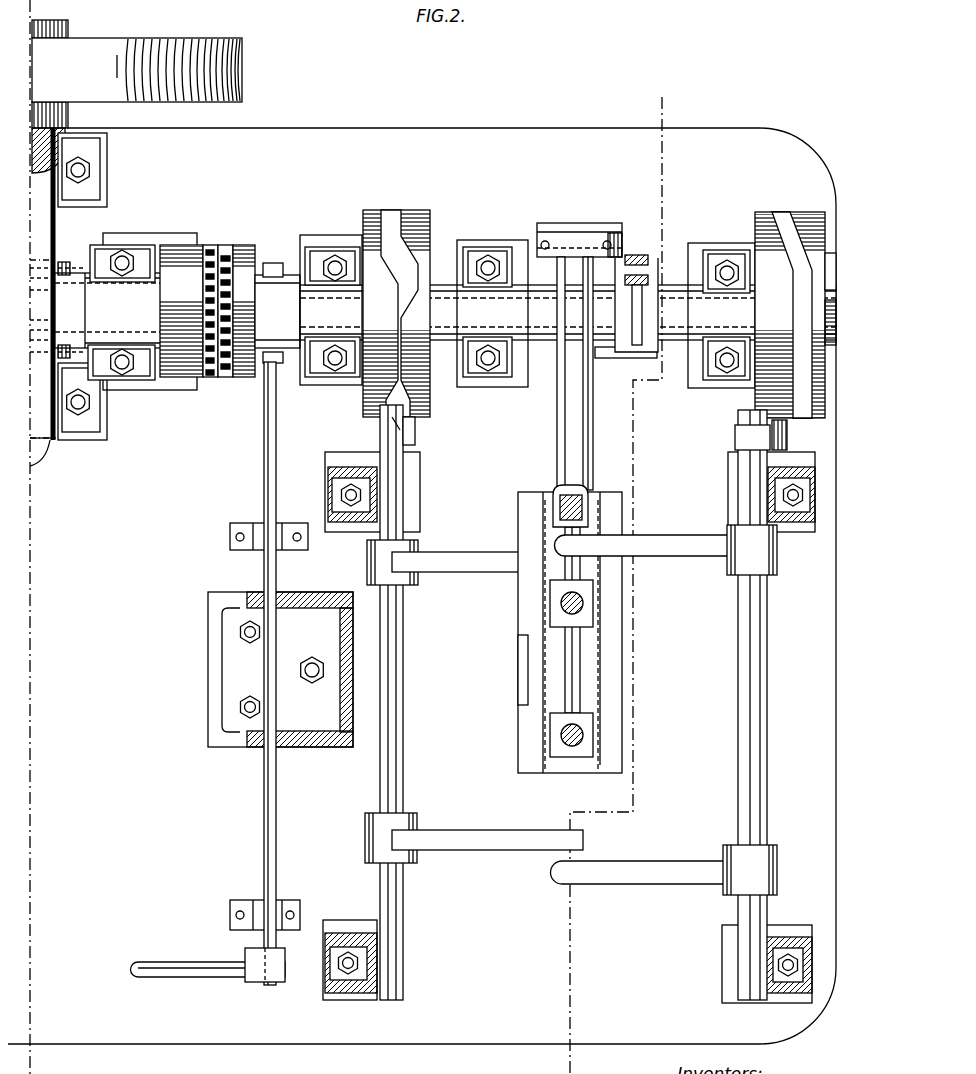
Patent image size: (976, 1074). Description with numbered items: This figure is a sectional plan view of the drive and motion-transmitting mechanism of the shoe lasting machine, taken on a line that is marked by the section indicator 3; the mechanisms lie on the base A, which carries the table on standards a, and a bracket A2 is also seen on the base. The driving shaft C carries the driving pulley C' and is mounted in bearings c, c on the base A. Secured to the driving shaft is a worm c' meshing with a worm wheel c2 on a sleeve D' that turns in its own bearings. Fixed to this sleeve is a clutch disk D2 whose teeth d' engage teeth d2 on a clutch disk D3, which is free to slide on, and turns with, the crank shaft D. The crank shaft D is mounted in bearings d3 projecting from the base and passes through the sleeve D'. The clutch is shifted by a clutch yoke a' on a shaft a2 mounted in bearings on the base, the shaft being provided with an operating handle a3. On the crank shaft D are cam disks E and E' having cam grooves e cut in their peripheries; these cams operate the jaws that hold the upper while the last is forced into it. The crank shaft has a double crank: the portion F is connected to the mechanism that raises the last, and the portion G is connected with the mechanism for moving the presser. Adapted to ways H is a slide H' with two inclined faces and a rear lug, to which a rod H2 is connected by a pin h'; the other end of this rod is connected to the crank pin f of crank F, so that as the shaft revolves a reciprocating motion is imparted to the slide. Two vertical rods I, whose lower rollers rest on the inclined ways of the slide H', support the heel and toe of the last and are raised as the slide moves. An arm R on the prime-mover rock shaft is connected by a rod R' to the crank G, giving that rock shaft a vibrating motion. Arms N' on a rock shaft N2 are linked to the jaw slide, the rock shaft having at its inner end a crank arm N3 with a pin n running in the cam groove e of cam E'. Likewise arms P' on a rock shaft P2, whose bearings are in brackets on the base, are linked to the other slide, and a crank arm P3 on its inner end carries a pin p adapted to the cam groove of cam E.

The base A is at (422, 537).
The bracket on frame A2 is at (280, 669).
The driving shaft C is at (50, 86).
The driving pulley C' is at (137, 70).
The bearings c is at (89, 286).
The worm c' is at (73, 300).
The worm wheel c2 is at (57, 291).
The teeth d' is at (218, 296).
The teeth d2 is at (236, 245).
The bearings d3 is at (337, 250).
The crank shaft D is at (545, 311).
The sleeve D' is at (109, 310).
The clutch disk D2 is at (181, 311).
The clutch disk D3 is at (244, 311).
The standards a is at (569, 727).
The clutch yoke a' is at (279, 319).
The shaft a2 is at (278, 436).
The operating handle a3 is at (215, 977).
The cam disk E is at (396, 292).
The cam disk E' is at (795, 297).
The cam groove e is at (388, 222).
The crank F is at (617, 216).
The crank pin f is at (622, 242).
The arm R is at (642, 250).
The rod R' is at (636, 305).
The crank G is at (670, 360).
The ways H is at (562, 632).
The slide H' is at (611, 620).
The rod H2 is at (593, 418).
The pin h' is at (558, 506).
The vertical rods I is at (560, 604).
The pin p is at (391, 430).
The arms P' is at (476, 698).
The rock shaft P2 is at (403, 663).
The crank arm P3 is at (420, 437).
The arms N' is at (664, 701).
The rock shaft N2 is at (767, 668).
The crank arm N3 is at (737, 442).
The pin n is at (790, 430).
The section line 3 is at (630, 98).